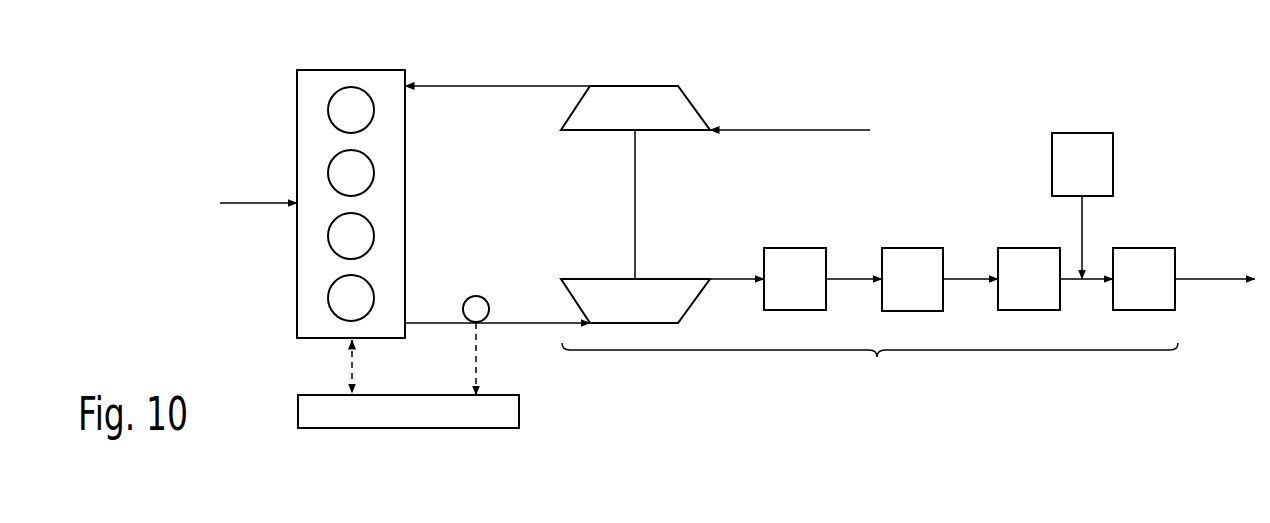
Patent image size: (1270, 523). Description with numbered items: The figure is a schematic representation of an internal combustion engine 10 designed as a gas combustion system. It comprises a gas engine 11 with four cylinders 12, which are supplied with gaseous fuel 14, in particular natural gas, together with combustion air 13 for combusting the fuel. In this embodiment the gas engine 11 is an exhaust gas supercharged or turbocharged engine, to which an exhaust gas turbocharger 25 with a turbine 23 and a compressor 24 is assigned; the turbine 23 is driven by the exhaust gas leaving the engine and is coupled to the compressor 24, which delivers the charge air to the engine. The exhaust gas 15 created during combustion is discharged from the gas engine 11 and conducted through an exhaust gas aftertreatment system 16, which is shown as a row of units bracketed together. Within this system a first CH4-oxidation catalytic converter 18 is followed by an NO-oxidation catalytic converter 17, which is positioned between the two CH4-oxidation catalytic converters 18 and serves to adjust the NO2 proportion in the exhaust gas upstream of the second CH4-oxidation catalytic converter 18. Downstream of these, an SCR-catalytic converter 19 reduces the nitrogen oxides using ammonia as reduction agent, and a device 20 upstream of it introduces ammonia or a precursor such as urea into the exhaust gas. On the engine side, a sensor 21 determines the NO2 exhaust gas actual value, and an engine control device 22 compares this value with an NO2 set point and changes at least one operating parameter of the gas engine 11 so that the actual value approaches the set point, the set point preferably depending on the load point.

The internal combustion engine 10 is at (1178, 60).
The gas engine 11 is at (297, 96).
The cylinders 12 is at (363, 113).
The combustion air 13 is at (505, 80).
The gaseous fuel 14 is at (250, 205).
The exhaust gas 15 is at (518, 318).
The exhaust gas aftertreatment system 16 is at (908, 334).
The NO-oxidation catalytic converter 17 is at (911, 257).
The CH4-oxidation catalytic converter 18 is at (795, 257).
The SCR-catalytic converter 19 is at (1144, 257).
The device 20 is at (1080, 145).
The sensor 21 is at (475, 298).
The engine control device 22 is at (508, 410).
The turbine 23 is at (665, 290).
The compressor 24 is at (665, 120).
The exhaust gas turbocharger 25 is at (690, 80).